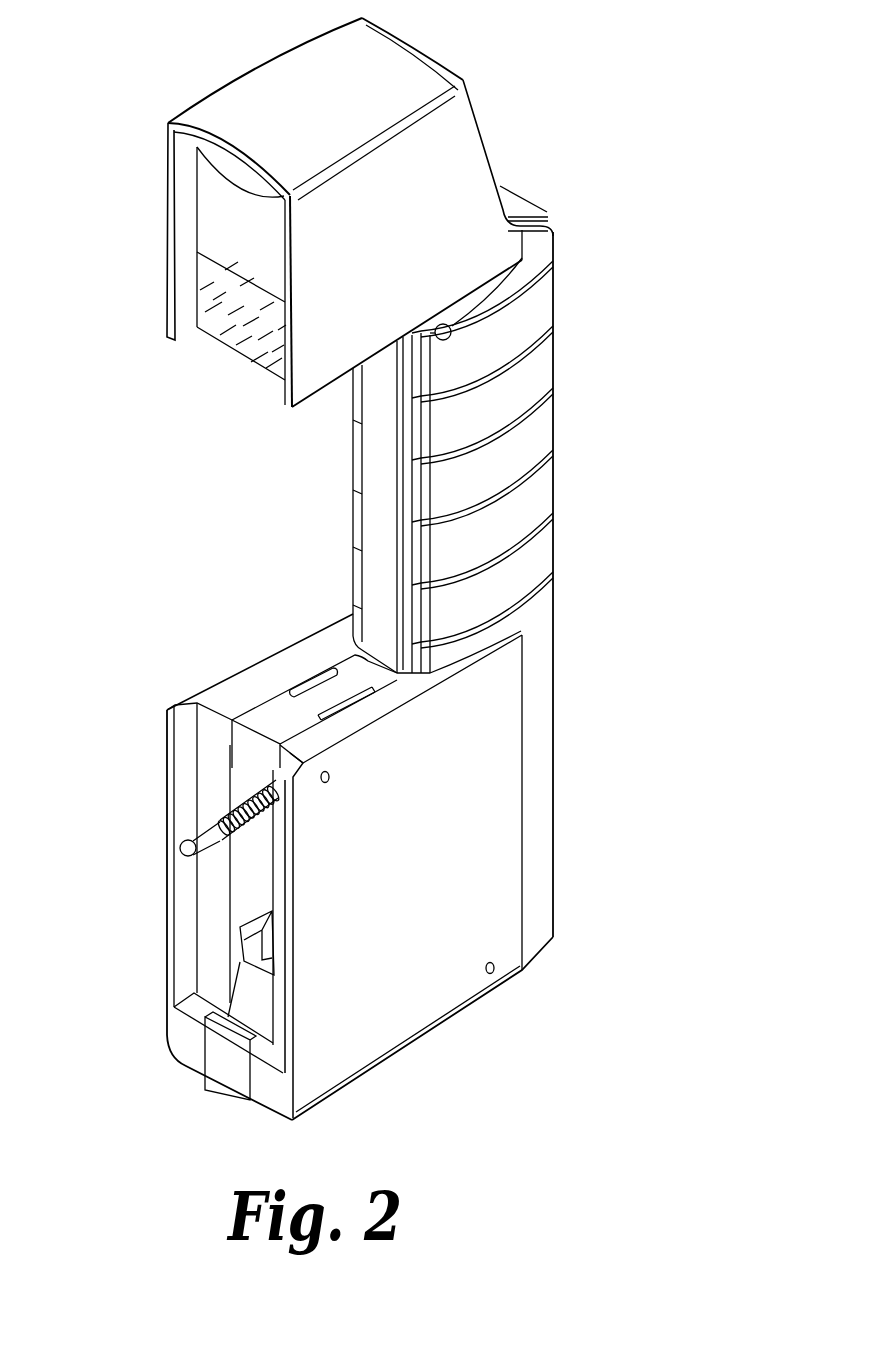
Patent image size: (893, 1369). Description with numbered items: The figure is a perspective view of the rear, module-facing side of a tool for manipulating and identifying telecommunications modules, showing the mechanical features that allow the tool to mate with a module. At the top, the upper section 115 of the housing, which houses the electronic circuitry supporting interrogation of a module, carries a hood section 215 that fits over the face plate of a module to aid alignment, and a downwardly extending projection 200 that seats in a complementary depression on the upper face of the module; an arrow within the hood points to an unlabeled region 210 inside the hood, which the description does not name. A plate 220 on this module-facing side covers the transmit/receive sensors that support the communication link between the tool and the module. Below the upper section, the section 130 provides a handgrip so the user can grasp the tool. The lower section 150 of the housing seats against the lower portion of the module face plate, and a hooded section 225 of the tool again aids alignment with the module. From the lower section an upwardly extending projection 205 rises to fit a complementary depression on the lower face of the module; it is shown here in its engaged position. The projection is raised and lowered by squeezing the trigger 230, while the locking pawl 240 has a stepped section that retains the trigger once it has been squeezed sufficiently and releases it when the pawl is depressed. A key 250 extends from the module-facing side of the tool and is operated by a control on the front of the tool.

The upper section 115 is at (310, 212).
The downwardly extending projection 200 is at (200, 174).
The cavity 210 is at (222, 221).
The hood section 215 is at (172, 250).
The plate 220 is at (243, 335).
The section 130 is at (535, 430).
The trigger part 230 is at (387, 537).
The locking pawl 240 is at (353, 677).
The key 250 is at (182, 848).
The hooded section 225 is at (185, 935).
The lower section 150 is at (490, 935).
The upwardly extending projection 205 is at (228, 1067).